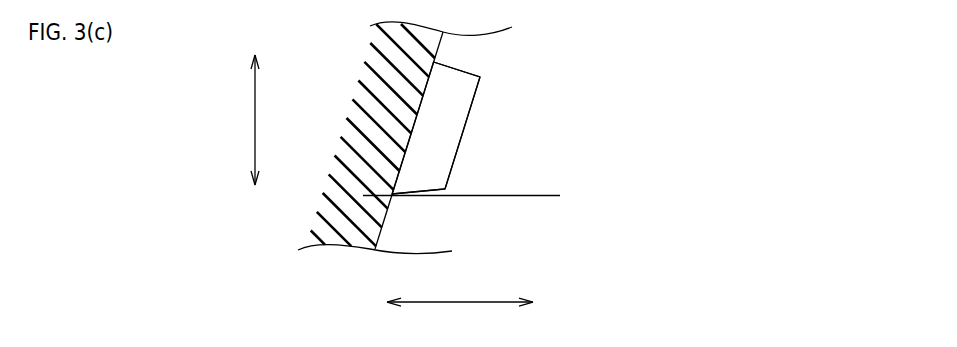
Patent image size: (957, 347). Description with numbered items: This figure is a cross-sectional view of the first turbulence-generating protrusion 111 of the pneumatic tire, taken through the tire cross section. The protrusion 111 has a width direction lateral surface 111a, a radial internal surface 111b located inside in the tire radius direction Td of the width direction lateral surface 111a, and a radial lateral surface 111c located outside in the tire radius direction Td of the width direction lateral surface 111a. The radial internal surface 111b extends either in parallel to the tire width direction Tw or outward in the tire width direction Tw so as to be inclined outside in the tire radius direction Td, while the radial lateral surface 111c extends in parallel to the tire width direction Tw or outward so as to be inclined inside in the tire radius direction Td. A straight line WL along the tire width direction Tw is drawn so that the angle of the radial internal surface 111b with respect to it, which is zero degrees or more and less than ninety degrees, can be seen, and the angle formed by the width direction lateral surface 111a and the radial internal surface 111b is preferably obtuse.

The first turbulence-generating protrusion 111 is at (476, 106).
The width direction lateral surface 111a is at (464, 128).
The radial internal surface 111b is at (418, 191).
The radial lateral surface 111c is at (464, 71).
The straight line along the tire width direction WL is at (530, 195).
The tire radius direction Td is at (241, 120).
The tire width direction Tw is at (460, 291).